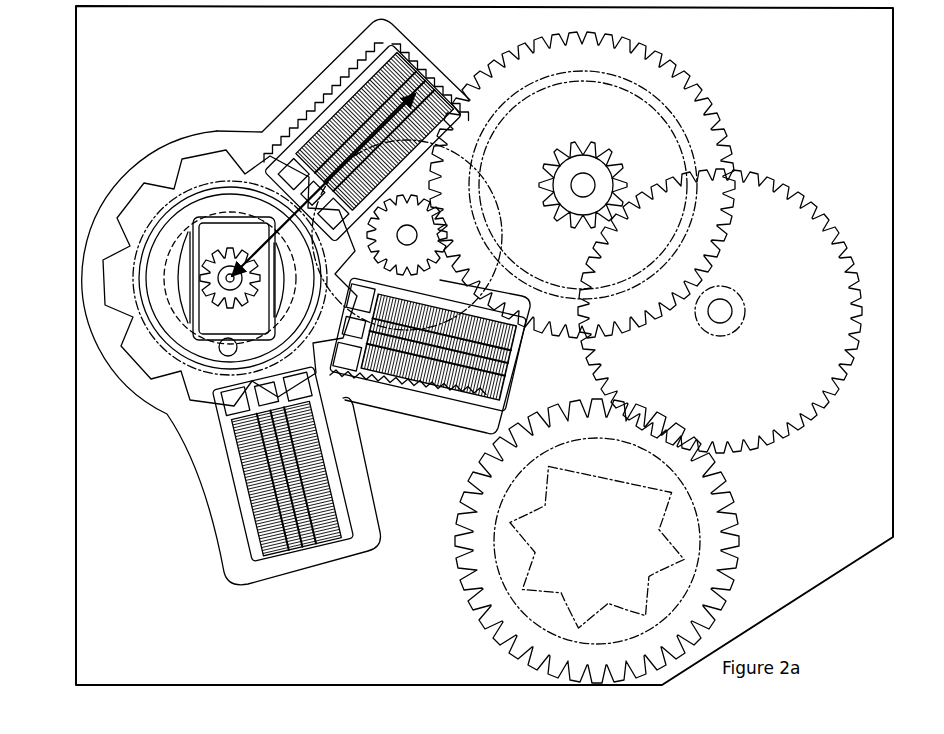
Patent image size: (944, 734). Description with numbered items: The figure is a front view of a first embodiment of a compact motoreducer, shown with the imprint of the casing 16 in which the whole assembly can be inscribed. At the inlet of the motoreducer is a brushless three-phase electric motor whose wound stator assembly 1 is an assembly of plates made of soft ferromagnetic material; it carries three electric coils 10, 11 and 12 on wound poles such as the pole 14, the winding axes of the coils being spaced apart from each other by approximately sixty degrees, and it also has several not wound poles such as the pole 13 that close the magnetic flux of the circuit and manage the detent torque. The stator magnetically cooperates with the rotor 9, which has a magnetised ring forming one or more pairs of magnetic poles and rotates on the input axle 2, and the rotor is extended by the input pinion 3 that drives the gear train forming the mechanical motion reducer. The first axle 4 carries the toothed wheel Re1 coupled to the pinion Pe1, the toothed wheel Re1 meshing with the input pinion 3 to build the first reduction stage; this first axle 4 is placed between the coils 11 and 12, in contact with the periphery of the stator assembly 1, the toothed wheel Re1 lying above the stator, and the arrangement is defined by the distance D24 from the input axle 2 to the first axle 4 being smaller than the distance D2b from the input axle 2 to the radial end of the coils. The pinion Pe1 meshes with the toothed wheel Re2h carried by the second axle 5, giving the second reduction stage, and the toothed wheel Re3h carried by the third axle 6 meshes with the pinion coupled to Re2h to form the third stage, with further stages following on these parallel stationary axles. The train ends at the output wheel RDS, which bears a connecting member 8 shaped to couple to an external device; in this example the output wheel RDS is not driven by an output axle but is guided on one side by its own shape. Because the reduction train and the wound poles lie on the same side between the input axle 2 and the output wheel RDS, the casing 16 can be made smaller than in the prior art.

The wound stator assembly 1 is at (245, 600).
The input axle 2 is at (228, 280).
The input pinion 3 is at (404, 236).
The first axle 4 is at (406, 245).
The second axle 5 is at (585, 185).
The third axle 6 is at (723, 310).
The connecting member 8 is at (520, 603).
The rotor 9 is at (188, 194).
The electric coil 10 is at (240, 457).
The electric coil 11 is at (452, 438).
The electric coil 12 is at (378, 116).
The not wound pole 13 is at (150, 262).
The pole 14 is at (262, 402).
The casing 16 is at (85, 572).
The distance from the input axle to the first axle D24 is at (222, 222).
The distance from the input axle to the radial end of the coils D2b is at (275, 243).
The toothed wheel Re1 is at (300, 120).
The pinion Pe1 is at (445, 218).
The toothed wheel Re2h is at (723, 115).
The toothed wheel Re3h is at (800, 440).
The output wheel RDS is at (720, 597).